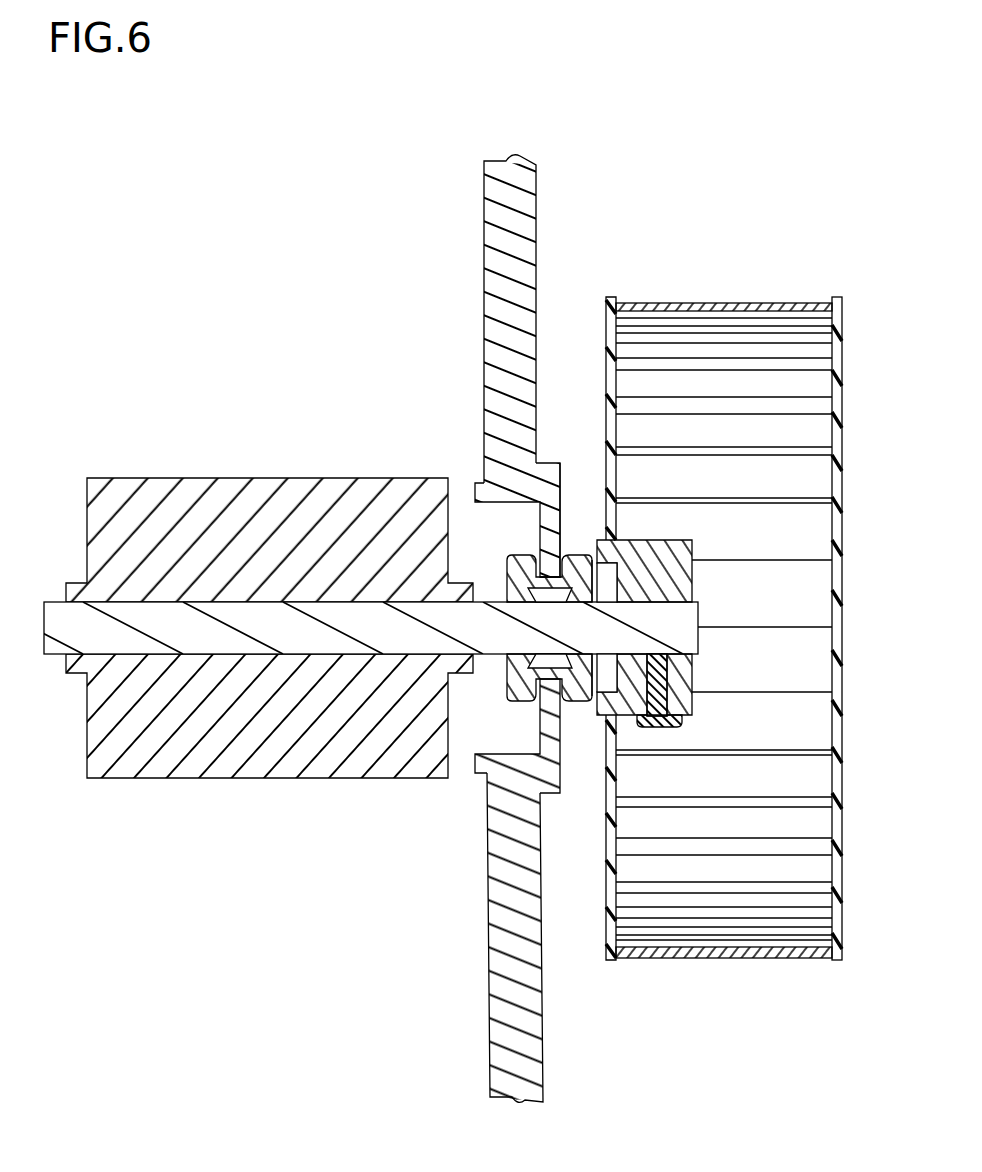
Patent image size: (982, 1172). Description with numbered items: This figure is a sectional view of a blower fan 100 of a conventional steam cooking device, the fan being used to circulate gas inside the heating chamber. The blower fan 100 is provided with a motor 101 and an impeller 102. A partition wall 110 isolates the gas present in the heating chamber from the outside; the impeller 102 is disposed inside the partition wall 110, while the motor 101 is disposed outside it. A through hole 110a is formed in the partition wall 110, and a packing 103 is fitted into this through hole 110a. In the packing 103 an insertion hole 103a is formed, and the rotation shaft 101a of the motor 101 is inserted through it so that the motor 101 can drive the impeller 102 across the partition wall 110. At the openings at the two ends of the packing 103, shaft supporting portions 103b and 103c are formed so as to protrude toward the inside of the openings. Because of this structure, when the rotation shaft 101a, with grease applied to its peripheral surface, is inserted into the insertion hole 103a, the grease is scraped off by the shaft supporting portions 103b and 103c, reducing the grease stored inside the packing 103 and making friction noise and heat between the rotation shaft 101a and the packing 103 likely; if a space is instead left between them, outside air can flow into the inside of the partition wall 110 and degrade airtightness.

The blower fan 100 is at (632, 170).
The motor 101 is at (205, 478).
The rotation shaft 101a is at (293, 657).
The impeller 102 is at (709, 296).
The packing 103 is at (583, 693).
The insertion hole 103a is at (508, 657).
The shaft supporting portion 103b is at (504, 606).
The shaft supporting portion 103c is at (594, 553).
The partition wall 110 is at (490, 1048).
The through hole 110a is at (540, 573).